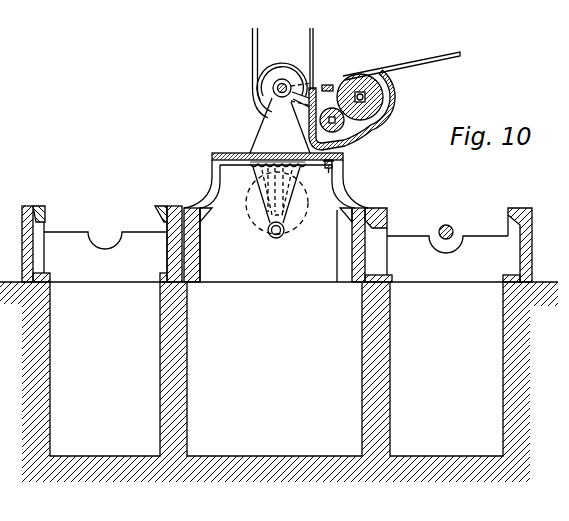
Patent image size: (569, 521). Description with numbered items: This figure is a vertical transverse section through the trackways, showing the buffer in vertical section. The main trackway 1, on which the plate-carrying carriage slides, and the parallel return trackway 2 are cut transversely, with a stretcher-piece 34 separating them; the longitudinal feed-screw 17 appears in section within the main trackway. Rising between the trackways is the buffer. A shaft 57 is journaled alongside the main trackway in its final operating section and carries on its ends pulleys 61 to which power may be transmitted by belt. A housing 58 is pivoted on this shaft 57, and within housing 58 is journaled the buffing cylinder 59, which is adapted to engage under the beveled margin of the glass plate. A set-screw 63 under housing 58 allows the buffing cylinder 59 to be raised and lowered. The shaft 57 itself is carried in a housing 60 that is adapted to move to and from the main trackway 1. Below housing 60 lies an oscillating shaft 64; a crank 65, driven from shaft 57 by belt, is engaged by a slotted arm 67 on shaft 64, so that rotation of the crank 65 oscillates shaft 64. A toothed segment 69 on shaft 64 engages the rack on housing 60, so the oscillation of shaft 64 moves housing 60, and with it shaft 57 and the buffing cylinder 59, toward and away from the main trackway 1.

The main trackway 1 is at (531, 210).
The return trackway 2 is at (45, 208).
The longitudinal feed-screw 17 is at (451, 227).
The stretcher-pieces 34 is at (342, 255).
The shaft 57 is at (282, 79).
The housing 58 is at (355, 140).
The buffing cylinder 59 is at (355, 77).
The housing for shaft 60 is at (268, 127).
The pulleys 61 is at (292, 70).
The set-screw 63 is at (300, 188).
The oscillating shaft 64 is at (267, 234).
The crank 65 is at (256, 193).
The slotted arm 67 is at (279, 239).
The toothed segment 69 is at (252, 166).